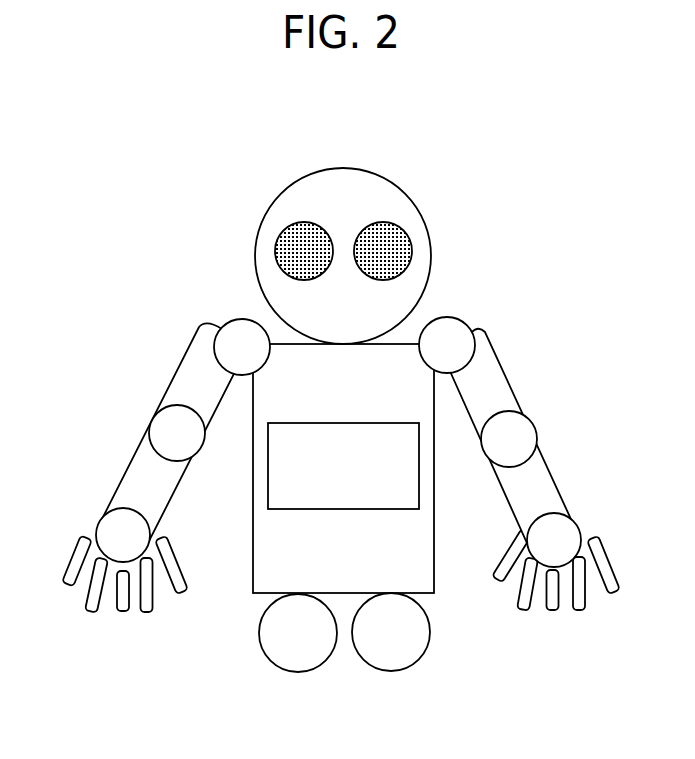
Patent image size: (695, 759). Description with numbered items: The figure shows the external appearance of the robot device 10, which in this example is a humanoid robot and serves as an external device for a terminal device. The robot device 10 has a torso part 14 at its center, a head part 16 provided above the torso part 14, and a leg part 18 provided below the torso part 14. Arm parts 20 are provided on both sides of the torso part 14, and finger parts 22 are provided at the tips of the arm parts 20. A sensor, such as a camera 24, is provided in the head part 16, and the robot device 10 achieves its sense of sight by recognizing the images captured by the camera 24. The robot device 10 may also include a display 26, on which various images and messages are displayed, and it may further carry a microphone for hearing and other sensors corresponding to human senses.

The robot device 10 is at (133, 123).
The torso part 14 is at (428, 573).
The head part 16 is at (388, 198).
The leg part 18 is at (272, 667).
The arm parts 20 is at (142, 463).
The finger parts 22 is at (80, 560).
The camera 24 is at (280, 237).
The display 26 is at (293, 487).